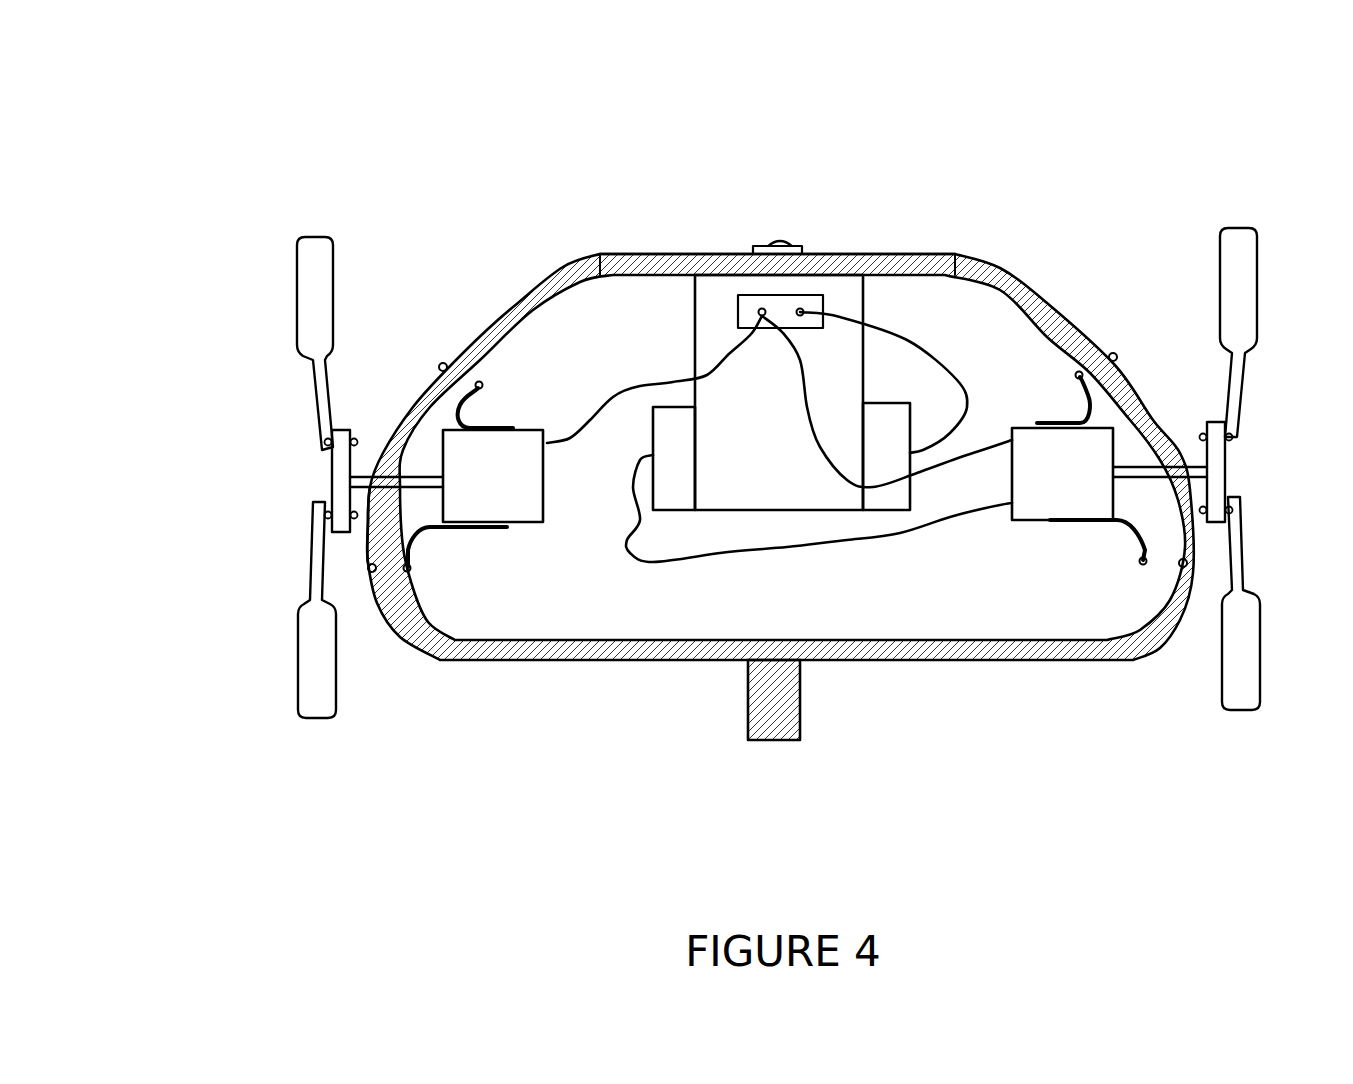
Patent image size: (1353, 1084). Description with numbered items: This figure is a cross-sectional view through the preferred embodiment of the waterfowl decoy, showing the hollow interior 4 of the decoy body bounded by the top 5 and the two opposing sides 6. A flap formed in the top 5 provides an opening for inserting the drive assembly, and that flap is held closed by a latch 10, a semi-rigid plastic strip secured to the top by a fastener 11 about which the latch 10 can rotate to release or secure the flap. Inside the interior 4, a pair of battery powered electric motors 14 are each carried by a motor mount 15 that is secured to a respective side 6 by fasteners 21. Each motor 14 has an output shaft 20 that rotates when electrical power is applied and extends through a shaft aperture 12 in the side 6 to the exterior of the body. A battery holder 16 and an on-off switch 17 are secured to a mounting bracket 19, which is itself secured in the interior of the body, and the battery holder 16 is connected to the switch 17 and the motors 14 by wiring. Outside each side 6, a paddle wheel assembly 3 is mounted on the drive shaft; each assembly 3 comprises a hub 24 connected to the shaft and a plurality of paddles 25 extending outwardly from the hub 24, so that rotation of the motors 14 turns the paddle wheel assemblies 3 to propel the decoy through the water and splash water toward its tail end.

The paddle wheel assembly 3 is at (295, 462).
The hollow interior 4 is at (815, 607).
The top 5 is at (618, 255).
The side 6 is at (403, 467).
The latch 10 is at (798, 245).
The fastener 11 is at (780, 245).
The shaft aperture 12 is at (1172, 450).
The electric motor 14 is at (510, 497).
The motor mount 15 is at (430, 537).
The battery holder 16 is at (658, 470).
The on-off switch 17 is at (777, 305).
The mounting bracket 19 is at (733, 462).
The output shaft 20 is at (360, 473).
The fastener 21 is at (358, 580).
The hub 24 is at (340, 472).
The paddle 25 is at (312, 647).